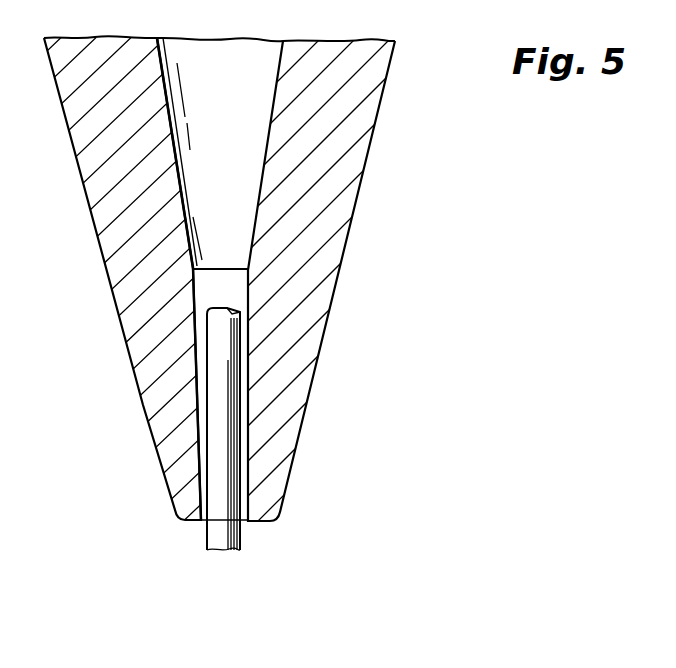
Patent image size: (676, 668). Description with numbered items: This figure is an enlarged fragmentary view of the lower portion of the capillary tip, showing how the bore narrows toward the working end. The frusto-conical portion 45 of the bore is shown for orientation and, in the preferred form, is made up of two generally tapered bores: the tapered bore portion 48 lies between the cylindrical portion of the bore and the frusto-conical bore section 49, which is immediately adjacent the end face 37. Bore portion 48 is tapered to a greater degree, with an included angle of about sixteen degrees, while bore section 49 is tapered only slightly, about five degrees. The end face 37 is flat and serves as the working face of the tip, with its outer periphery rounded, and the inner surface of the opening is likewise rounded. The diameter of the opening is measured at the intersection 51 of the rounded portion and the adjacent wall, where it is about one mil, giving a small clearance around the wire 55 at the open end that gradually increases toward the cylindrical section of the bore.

The frusto-conical portion of the bore 45 is at (262, 212).
The tapered bore portion 48 is at (179, 166).
The frusto-conical bore section 49 is at (199, 374).
The intersection 51 is at (218, 520).
The wire 55 is at (227, 407).
The end face 37 is at (257, 522).